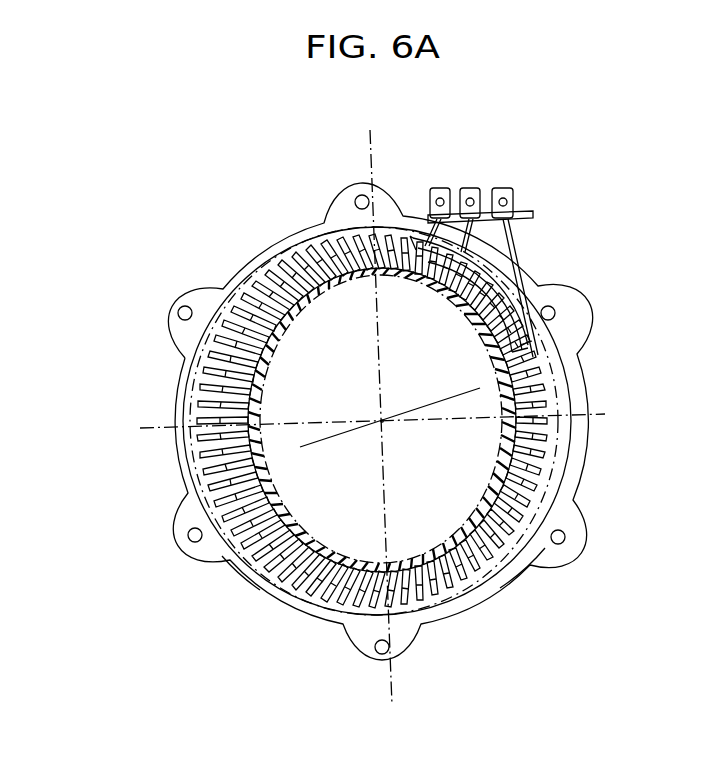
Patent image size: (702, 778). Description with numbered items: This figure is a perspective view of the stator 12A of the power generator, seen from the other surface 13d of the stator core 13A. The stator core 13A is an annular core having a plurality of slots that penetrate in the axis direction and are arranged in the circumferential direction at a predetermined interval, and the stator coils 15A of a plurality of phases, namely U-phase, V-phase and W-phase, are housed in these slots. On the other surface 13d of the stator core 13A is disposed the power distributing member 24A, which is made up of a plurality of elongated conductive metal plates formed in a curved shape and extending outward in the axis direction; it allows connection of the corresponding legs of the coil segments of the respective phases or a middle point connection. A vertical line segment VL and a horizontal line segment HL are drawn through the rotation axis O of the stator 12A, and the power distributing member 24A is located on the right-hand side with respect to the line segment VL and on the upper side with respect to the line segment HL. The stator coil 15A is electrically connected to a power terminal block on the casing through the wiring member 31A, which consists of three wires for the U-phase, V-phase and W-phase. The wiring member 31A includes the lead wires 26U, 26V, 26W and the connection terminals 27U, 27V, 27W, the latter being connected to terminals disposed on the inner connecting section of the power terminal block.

The stator 12A is at (264, 243).
The stator core 13A is at (576, 443).
The other surface 13d is at (537, 550).
The stator coils 15A is at (222, 556).
The power distributing member 24A is at (505, 328).
The lead wire 26U is at (540, 217).
The lead wire 26V is at (470, 268).
The lead wire 26W is at (470, 318).
The connection terminal 27U is at (504, 188).
The connection terminal 27V is at (473, 188).
The connection terminal 27W is at (446, 188).
The wiring member 31A is at (540, 209).
The line segment HL is at (605, 414).
The line segment VL is at (392, 705).
The rotation axis O is at (283, 548).